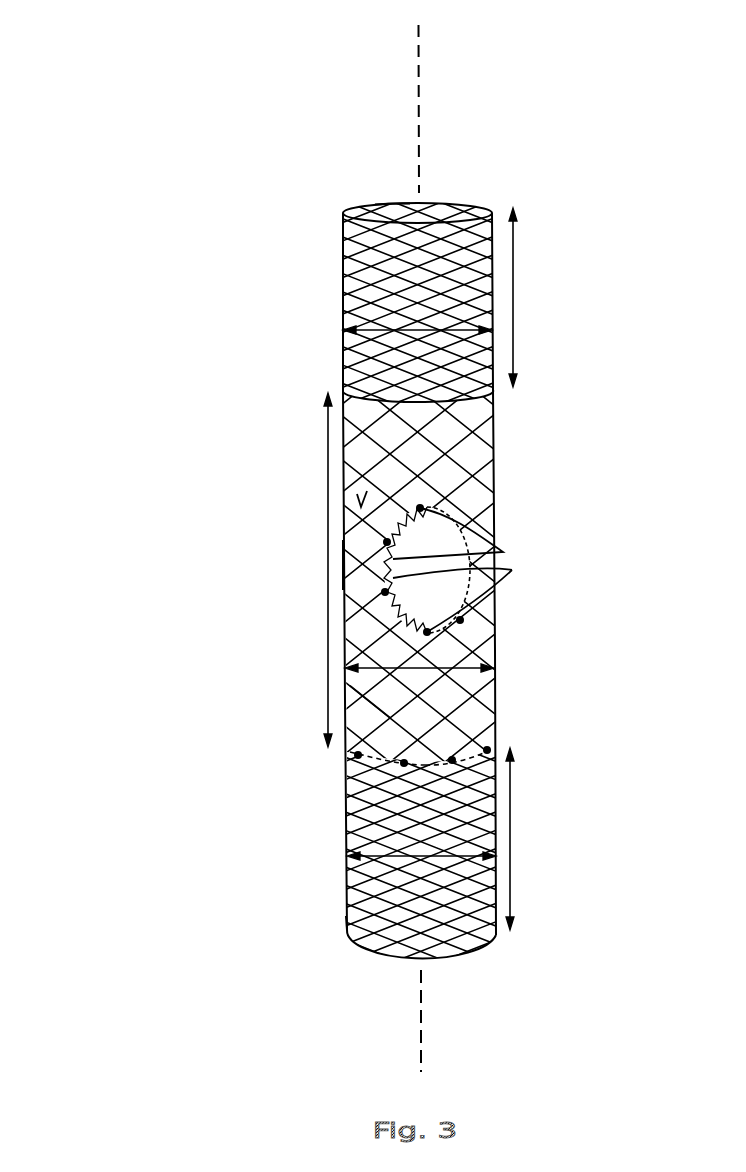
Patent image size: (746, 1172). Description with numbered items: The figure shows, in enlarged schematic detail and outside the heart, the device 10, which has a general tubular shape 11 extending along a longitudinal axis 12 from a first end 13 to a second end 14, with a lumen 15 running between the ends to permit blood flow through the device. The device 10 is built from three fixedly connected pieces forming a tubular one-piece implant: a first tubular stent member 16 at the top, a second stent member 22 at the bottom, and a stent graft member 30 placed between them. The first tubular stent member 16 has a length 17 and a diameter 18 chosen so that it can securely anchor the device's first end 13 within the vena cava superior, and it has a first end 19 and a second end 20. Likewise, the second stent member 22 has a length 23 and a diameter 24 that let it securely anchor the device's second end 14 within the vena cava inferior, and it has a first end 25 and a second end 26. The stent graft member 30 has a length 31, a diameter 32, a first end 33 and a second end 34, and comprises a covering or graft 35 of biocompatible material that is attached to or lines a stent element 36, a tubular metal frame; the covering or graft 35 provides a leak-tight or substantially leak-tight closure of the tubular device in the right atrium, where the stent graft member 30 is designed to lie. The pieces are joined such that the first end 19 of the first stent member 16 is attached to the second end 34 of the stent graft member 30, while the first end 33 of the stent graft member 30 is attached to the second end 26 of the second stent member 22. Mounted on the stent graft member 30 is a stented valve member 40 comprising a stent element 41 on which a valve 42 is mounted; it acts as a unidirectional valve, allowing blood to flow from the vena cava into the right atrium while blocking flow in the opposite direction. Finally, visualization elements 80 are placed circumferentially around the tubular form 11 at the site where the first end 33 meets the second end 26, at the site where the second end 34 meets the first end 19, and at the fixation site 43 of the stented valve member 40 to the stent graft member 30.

The device 10 is at (77, 168).
The general tubular shape 11 is at (476, 172).
The longitudinal axis 12 is at (415, 69).
The first end 13 is at (440, 212).
The second end 14 is at (466, 950).
The lumen 15 is at (400, 202).
The first tubular stent member 16 is at (481, 297).
The length 17 is at (516, 334).
The diameter 18 is at (416, 338).
The first end 19 is at (495, 386).
The second end 20 is at (343, 212).
The second stent member 22 is at (497, 809).
The length 23 is at (514, 859).
The diameter 24 is at (400, 852).
The first end 25 is at (349, 936).
The second end 26 is at (352, 753).
The stent graft member 30 is at (484, 461).
The length 31 is at (328, 573).
The diameter 32 is at (458, 672).
The first end 33 is at (490, 750).
The second end 34 is at (330, 393).
The covering or graft 35 is at (355, 500).
The stent element 36 is at (368, 712).
The stented valve member 40 is at (522, 569).
The stent element 41 is at (388, 620).
The valve 42 is at (485, 592).
The fixation site 43 is at (466, 628).
The visualization elements 80 is at (420, 507).